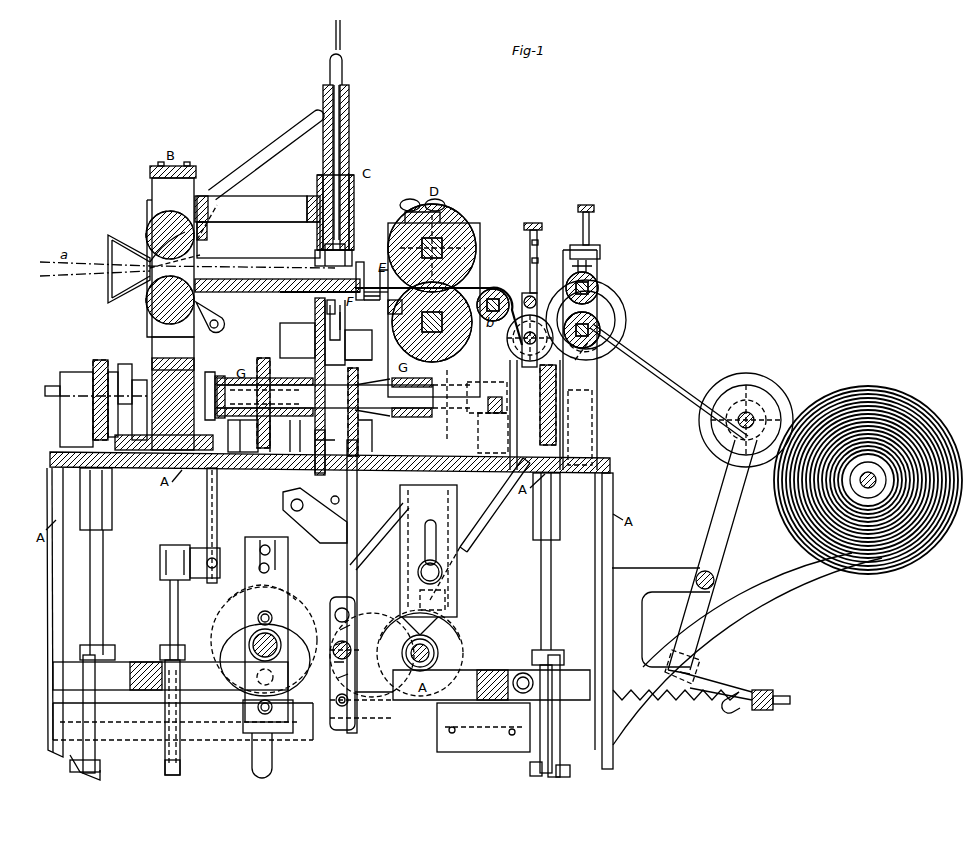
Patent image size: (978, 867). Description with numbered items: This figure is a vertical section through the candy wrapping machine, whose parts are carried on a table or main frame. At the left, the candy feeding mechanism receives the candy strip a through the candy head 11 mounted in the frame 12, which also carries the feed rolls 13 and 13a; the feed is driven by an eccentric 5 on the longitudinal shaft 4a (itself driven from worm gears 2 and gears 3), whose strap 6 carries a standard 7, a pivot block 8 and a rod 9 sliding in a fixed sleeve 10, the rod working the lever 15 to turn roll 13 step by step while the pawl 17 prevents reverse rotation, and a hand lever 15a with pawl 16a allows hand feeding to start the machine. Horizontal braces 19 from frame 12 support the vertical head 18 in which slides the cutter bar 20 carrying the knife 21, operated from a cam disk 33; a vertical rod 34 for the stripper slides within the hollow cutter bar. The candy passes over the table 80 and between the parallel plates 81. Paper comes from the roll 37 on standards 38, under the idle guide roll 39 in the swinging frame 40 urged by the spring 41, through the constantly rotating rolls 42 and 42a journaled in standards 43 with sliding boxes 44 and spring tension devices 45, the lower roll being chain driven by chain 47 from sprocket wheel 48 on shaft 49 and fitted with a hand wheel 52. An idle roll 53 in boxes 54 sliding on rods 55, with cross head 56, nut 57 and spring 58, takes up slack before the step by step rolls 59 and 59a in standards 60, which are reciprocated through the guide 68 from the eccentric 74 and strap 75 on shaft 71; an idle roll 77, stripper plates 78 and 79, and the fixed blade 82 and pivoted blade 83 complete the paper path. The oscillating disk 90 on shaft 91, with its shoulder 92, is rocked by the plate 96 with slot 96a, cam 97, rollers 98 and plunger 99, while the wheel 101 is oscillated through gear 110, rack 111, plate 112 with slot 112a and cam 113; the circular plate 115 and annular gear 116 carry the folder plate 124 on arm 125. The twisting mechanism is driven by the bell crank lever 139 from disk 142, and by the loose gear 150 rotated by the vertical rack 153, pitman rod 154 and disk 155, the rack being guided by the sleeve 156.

The candy strip a is at (187, 269).
The worm gears 2 is at (218, 608).
The gears 3 is at (243, 740).
The longitudinal shaft 4a is at (321, 707).
The eccentric 5 is at (180, 672).
The strap 6 is at (180, 773).
The standard 7 is at (644, 358).
The pivot block 8 is at (190, 548).
The rod 9 is at (217, 510).
The fixed sleeve 10 is at (232, 380).
The candy head 11 is at (129, 269).
The frame 12 is at (164, 306).
The feed roll 13 is at (148, 305).
The feed roll 13a is at (148, 228).
The lever 15 is at (210, 317).
The hand lever 15a is at (258, 148).
The pawl 16a is at (197, 232).
The pawl 17 is at (195, 260).
The vertical head 18 is at (360, 205).
The horizontal braces 19 is at (262, 200).
The cutter bar 20 is at (349, 105).
The knife 21 is at (333, 258).
The disk 33 is at (345, 244).
The vertical rod 34 is at (341, 36).
The roll of paper 37 is at (870, 385).
The standards 38 is at (828, 594).
The idle guide roll 39 is at (757, 390).
The swinging frame 40 is at (702, 524).
The spring 41 is at (716, 706).
The upper roll 42 is at (598, 286).
The lower roll 42a is at (612, 308).
The standards 43 is at (597, 380).
The sliding boxes 44 is at (598, 276).
The spring tension devices 45 is at (589, 222).
The chain 47 is at (485, 522).
The sprocket wheel 48 is at (380, 612).
The shaft 49 is at (375, 600).
The hand wheel 52 is at (624, 326).
The idle roll 53 is at (517, 318).
The boxes 54 is at (536, 300).
The rods 55 is at (537, 268).
The cross head 56 is at (522, 300).
The nut 57 is at (533, 223).
The spring 58 is at (538, 242).
The step by step roll 59 is at (448, 218).
The step by step roll 59a is at (470, 340).
The standards 60 is at (450, 372).
The guide 68 is at (445, 512).
The shaft 71 is at (432, 645).
The eccentric 74 is at (440, 635).
The strap 75 is at (455, 652).
The idle roll 77 is at (490, 288).
The stripper plate 78 is at (396, 262).
The fixed stripper plate 79 is at (388, 312).
The table 80 is at (225, 292).
The parallel plates 81 is at (262, 292).
The fixed blade 82 is at (365, 300).
The pivoted blade 83 is at (365, 262).
The disk 90 is at (316, 325).
The shaft 91 is at (342, 397).
The shoulder 92 is at (315, 300).
The plate 96 is at (288, 555).
The vertical slot 96a is at (260, 592).
The cam 97 is at (265, 660).
The rollers 98 is at (270, 614).
The plunger 99 is at (272, 765).
The wheel 101 is at (329, 452).
The gear 110 is at (350, 423).
The rack 111 is at (364, 566).
The plate 112 is at (342, 607).
The vertical slot 112a is at (337, 666).
The cam 113 is at (356, 694).
The circular plate 115 is at (340, 326).
The annular gear 116 is at (359, 355).
The folder plate 124 is at (297, 340).
The arm 125 is at (345, 342).
The bell crank lever 139 is at (322, 548).
The disk 142 is at (264, 640).
The gear 150 is at (92, 368).
The vertical rack 153 is at (103, 558).
The pitman rod 154 is at (55, 760).
The disk 155 is at (95, 752).
The sleeve 156 is at (122, 512).